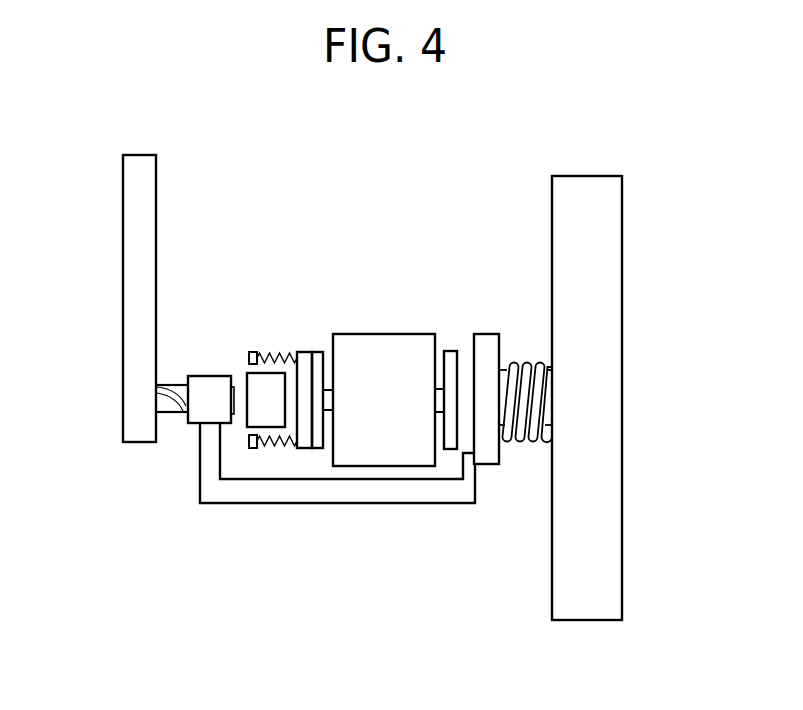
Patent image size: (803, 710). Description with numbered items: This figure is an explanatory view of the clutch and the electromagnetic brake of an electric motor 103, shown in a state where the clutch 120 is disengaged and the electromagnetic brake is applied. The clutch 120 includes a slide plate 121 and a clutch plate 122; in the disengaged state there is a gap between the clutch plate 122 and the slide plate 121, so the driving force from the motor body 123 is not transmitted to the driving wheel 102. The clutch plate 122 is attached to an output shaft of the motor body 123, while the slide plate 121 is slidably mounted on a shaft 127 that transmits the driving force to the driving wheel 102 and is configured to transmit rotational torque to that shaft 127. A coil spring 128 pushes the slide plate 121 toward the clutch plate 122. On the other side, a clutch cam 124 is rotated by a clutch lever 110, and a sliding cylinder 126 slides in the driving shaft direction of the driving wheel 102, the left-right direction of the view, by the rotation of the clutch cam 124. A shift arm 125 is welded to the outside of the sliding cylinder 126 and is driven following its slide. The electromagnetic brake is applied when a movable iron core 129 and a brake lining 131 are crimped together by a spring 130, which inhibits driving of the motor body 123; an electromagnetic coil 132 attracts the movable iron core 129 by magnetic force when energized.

The driving wheel 102 is at (598, 286).
The electric motor 103 is at (358, 228).
The clutch lever 110 is at (138, 260).
The clutch 120 is at (483, 236).
The slide plate 121 is at (483, 358).
The clutch plate 122 is at (448, 367).
The motor body 123 is at (392, 347).
The clutch cam 124 is at (167, 402).
The shift arm 125 is at (373, 490).
The sliding cylinder 126 is at (213, 405).
The shaft 127 is at (503, 383).
The coil spring 128 is at (530, 440).
The movable iron core 129 is at (303, 367).
The spring 130 is at (280, 447).
The brake lining 131 is at (317, 363).
The electromagnetic coil 132 is at (260, 395).